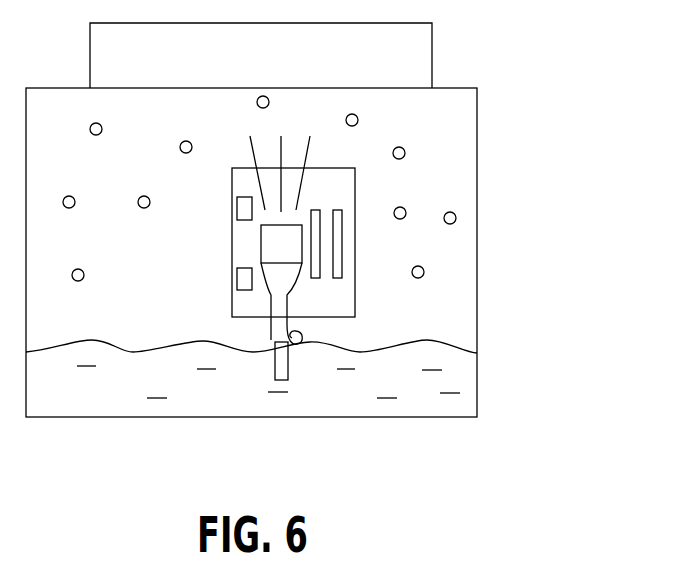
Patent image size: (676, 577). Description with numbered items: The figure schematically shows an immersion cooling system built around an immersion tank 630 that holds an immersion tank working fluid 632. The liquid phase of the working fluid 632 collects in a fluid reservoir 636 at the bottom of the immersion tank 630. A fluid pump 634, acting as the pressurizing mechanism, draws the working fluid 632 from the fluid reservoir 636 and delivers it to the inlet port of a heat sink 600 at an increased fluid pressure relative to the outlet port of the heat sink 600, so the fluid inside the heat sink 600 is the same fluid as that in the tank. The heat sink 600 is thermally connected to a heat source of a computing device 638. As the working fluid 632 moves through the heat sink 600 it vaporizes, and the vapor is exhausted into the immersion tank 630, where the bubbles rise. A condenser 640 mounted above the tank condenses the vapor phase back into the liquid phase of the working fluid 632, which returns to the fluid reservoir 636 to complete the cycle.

The immersion tank 630 is at (507, 87).
The condenser 640 is at (279, 67).
The immersion tank working fluid 632 is at (85, 270).
The computing device 638 is at (328, 302).
The heat sink 600 is at (302, 238).
The fluid pump 634 is at (300, 335).
The fluid reservoir 636 is at (462, 373).